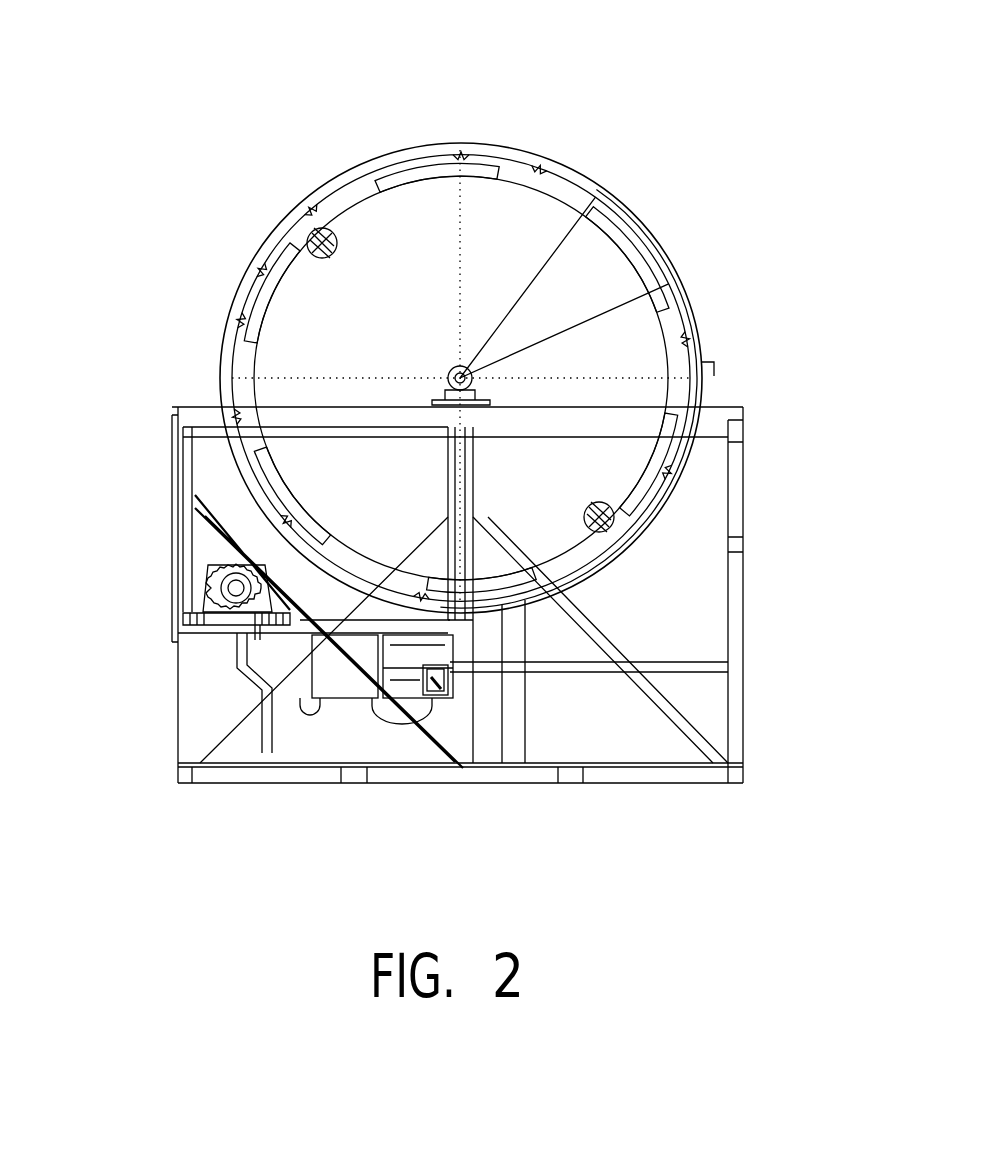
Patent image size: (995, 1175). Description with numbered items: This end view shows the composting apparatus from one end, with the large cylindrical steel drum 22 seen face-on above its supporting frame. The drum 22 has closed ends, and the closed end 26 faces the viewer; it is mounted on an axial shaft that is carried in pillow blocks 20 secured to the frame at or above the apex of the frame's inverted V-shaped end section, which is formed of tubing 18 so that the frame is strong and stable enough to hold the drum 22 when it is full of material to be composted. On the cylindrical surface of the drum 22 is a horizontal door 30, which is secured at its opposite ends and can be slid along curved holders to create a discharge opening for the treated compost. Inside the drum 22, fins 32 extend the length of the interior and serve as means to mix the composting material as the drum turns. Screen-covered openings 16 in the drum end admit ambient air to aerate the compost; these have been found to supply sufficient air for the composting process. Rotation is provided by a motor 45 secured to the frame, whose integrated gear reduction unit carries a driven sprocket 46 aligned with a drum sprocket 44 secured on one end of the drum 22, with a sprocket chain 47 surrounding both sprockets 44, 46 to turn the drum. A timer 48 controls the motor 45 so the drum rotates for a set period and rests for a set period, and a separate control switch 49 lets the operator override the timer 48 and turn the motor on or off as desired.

The openings 16 is at (305, 235).
The tubing 18 is at (600, 635).
The pillow blocks 20 is at (470, 376).
The drum 22 is at (468, 142).
The closed end 26 is at (375, 250).
The horizontal door 30 is at (700, 300).
The fins 32 is at (531, 217).
The drum sprocket 44 is at (648, 247).
The motor 45 is at (212, 576).
The driven sprocket 46 is at (215, 606).
The sprocket chain 47 is at (195, 495).
The timer 48 is at (350, 687).
The control switch 49 is at (440, 700).